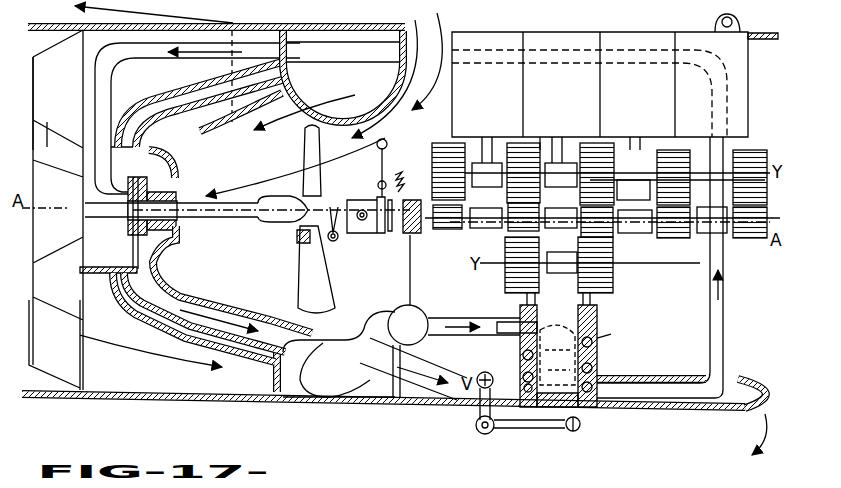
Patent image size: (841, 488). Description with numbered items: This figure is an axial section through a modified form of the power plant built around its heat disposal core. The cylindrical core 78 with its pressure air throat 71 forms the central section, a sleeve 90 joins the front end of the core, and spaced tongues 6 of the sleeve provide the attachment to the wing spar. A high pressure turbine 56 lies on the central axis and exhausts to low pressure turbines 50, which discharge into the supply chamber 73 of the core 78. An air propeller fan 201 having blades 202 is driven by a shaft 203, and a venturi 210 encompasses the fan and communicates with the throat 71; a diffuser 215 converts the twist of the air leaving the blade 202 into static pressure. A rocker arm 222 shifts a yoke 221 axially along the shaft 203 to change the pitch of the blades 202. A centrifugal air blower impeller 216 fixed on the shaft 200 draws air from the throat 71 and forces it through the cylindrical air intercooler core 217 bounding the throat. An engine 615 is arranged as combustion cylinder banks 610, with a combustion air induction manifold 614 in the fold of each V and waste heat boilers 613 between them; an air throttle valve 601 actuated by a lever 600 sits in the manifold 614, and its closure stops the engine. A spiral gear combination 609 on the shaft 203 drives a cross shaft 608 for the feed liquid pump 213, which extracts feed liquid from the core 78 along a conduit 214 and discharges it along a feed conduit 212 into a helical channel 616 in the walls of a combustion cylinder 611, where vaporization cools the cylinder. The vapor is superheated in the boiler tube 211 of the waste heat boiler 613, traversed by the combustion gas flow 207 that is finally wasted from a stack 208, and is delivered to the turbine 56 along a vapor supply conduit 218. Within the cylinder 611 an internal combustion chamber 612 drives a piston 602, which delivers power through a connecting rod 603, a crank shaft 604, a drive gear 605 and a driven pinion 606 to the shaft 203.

The spaced tongues 6 is at (707, 428).
The low pressure turbines 50 is at (56, 210).
The high pressure turbine 56 is at (85, 223).
The pressure air throat 71 is at (248, 163).
The supply chamber 73 is at (181, 317).
The cylindrical core 78 is at (167, 361).
The sleeve 90 is at (357, 30).
The shaft 200 is at (188, 222).
The air propeller fan 201 is at (290, 228).
The blades 202 is at (300, 259).
The shaft 203 is at (386, 242).
The combustion gas flow 207 is at (602, 408).
The stack 208 is at (770, 380).
The venturi 210 is at (352, 113).
The boiler tube 211 is at (660, 384).
The feed conduit 212 is at (456, 318).
The feed liquid pump 213 is at (431, 270).
The conduit 214 is at (332, 405).
The diffuser 215 is at (292, 289).
The centrifugal air blower impeller 216 is at (160, 172).
The cylindrical air intercooler core 217 is at (160, 292).
The vapor supply conduit 218 is at (343, 64).
The yoke 221 is at (362, 250).
The rocker arm 222 is at (368, 201).
The lever 600 is at (516, 437).
The air throttle valve 601 is at (484, 372).
The piston 602 is at (597, 318).
The connecting rod 603 is at (600, 300).
The crank shaft 604 is at (598, 255).
The drive gear 605 is at (725, 265).
The driven pinion 606 is at (540, 137).
The cross shaft 608 is at (409, 284).
The spiral gear combination 609 is at (399, 170).
The combustion cylinder banks 610 is at (598, 32).
The combustion cylinder 611 is at (590, 208).
The internal combustion chamber 612 is at (574, 432).
The waste heat boilers 613 is at (662, 410).
The combustion air induction manifold 614 is at (475, 420).
The engine 615 is at (550, 31).
The helical channel 616 is at (597, 360).